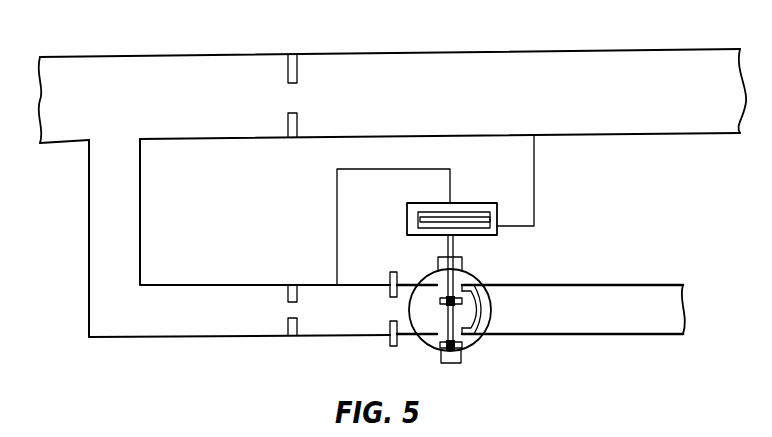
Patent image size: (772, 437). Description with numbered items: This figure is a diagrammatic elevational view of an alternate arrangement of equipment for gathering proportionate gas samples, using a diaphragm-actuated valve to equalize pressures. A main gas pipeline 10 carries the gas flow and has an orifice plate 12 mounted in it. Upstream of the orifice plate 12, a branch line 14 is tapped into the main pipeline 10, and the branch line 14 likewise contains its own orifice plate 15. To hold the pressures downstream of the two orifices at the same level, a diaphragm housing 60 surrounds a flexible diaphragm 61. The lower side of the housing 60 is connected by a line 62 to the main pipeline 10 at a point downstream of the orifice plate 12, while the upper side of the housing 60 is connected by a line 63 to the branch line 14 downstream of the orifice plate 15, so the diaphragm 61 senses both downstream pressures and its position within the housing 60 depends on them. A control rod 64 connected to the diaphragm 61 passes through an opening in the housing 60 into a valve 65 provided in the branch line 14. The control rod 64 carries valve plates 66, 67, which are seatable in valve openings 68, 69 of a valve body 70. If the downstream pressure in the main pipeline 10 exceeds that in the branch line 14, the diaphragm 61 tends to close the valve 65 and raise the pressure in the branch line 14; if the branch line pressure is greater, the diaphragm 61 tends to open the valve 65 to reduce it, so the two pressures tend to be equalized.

The main gas pipeline 10 is at (128, 34).
The orifice plate 12 is at (297, 68).
The branch line 14 is at (89, 231).
The orifice plate 15 is at (290, 292).
The diaphragm housing 60 is at (421, 203).
The flexible diaphragm 61 is at (492, 221).
The line 62 is at (534, 206).
The line 63 is at (399, 169).
The control rod 64 is at (456, 243).
The valve 65 is at (500, 343).
The valve plate 66 is at (463, 302).
The valve plate 67 is at (464, 347).
The valve opening 68 is at (442, 268).
The valve opening 69 is at (440, 342).
The valve body 70 is at (406, 328).